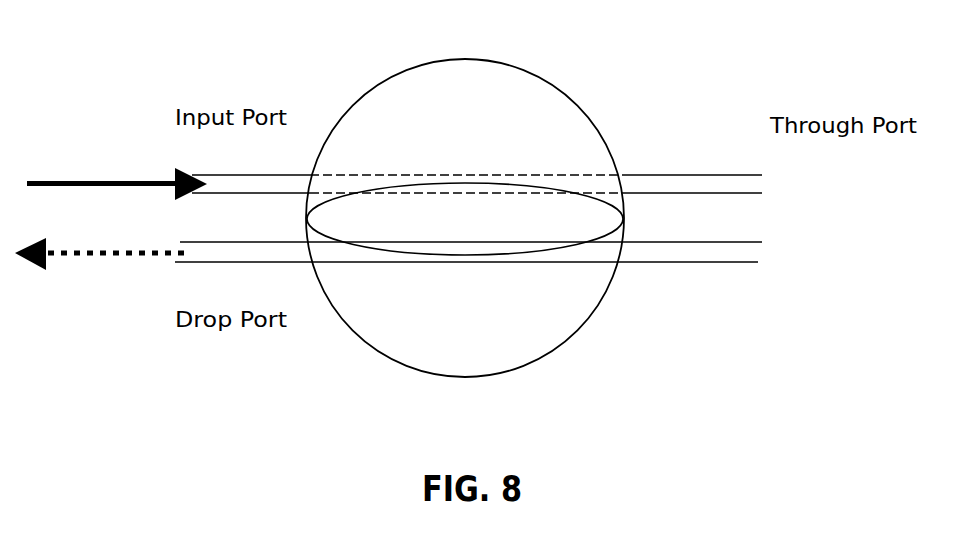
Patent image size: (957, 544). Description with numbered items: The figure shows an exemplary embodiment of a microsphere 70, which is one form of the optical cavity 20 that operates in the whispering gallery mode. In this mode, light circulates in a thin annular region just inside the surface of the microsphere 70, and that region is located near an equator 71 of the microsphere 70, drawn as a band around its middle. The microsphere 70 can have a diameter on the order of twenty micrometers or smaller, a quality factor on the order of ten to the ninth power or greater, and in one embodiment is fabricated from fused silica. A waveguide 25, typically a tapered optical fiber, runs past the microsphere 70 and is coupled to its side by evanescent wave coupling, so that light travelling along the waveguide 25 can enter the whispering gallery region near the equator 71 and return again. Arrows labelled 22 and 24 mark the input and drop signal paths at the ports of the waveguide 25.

The optical cavity 20 is at (525, 213).
The input optical signal 22 is at (123, 180).
The drop optical signal 24 is at (137, 258).
The waveguide 25 is at (524, 218).
The microsphere 70 is at (552, 108).
The equator 71 is at (615, 200).